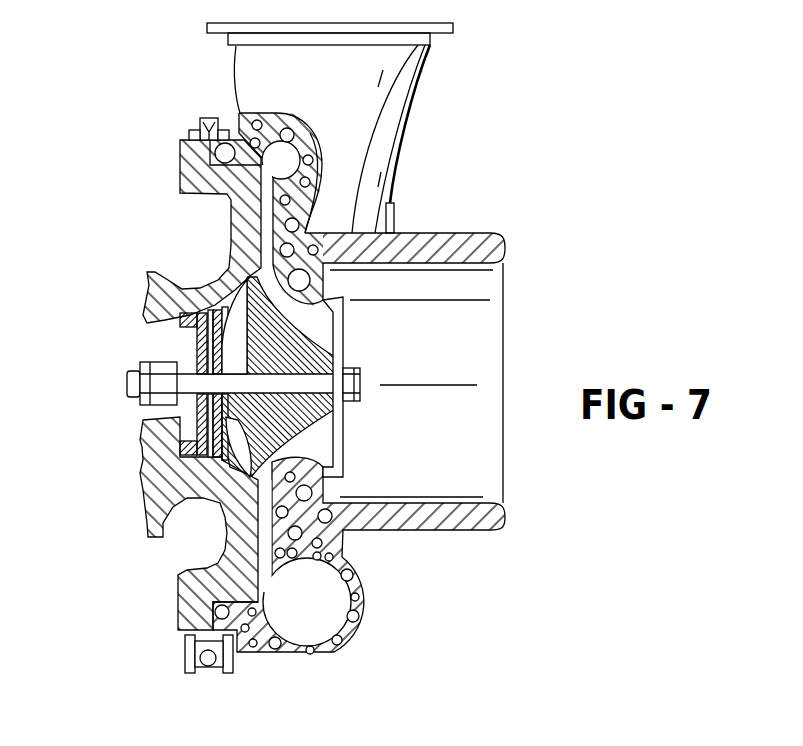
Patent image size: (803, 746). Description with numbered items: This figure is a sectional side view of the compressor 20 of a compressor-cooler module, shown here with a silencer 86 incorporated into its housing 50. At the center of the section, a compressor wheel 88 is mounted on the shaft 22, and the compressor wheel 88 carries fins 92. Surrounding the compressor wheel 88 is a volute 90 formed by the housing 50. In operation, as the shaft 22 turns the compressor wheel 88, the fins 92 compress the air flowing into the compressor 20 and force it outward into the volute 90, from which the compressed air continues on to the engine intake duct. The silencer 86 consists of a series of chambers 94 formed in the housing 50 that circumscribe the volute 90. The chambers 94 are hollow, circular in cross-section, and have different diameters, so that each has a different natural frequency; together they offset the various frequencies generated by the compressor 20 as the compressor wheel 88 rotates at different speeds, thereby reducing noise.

The compressor 20 is at (453, 230).
The shaft 22 is at (137, 385).
The housing 50 is at (304, 139).
The silencer 86 is at (323, 156).
The compressor wheel 88 is at (318, 360).
The volute 90 is at (283, 168).
The fins 92 is at (307, 343).
The chambers 94 is at (311, 277).